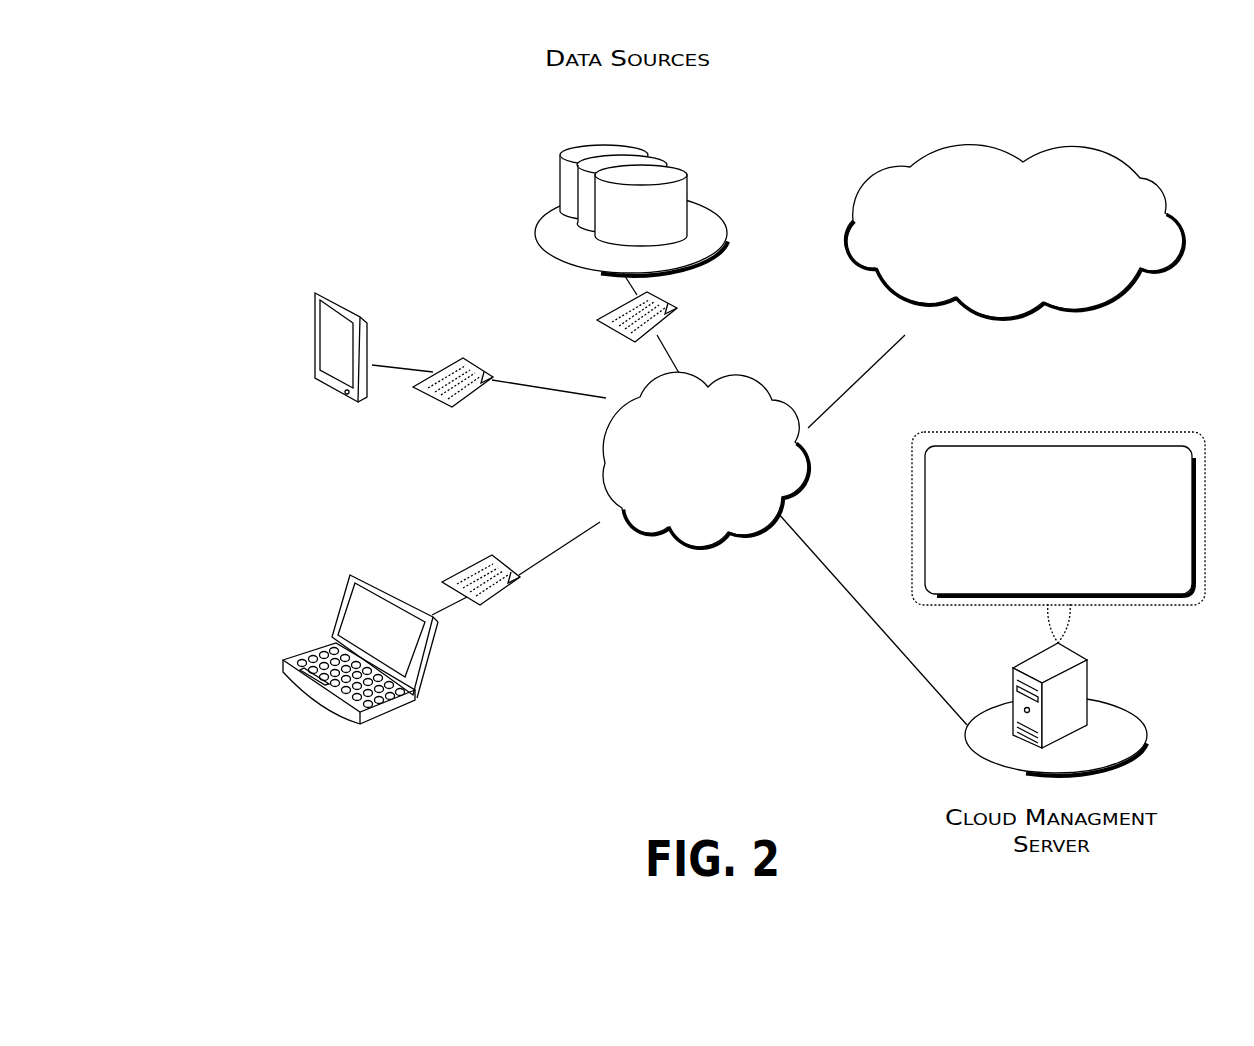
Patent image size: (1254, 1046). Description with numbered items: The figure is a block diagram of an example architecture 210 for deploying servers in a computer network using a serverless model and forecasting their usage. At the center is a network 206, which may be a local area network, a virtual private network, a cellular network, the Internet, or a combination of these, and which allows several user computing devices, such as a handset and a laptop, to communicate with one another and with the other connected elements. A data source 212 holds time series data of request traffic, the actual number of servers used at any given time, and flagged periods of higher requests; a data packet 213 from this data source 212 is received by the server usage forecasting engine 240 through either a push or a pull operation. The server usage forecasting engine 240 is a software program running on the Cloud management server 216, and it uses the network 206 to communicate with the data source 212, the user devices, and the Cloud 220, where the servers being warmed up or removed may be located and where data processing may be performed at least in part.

The architecture 210 is at (252, 103).
The network 206 is at (607, 440).
The data source 212 is at (708, 205).
The data packet 213 is at (670, 303).
The Cloud 220 is at (1133, 296).
The server usage forecasting engine 240 is at (1038, 560).
The Cloud management server 216 is at (1133, 716).